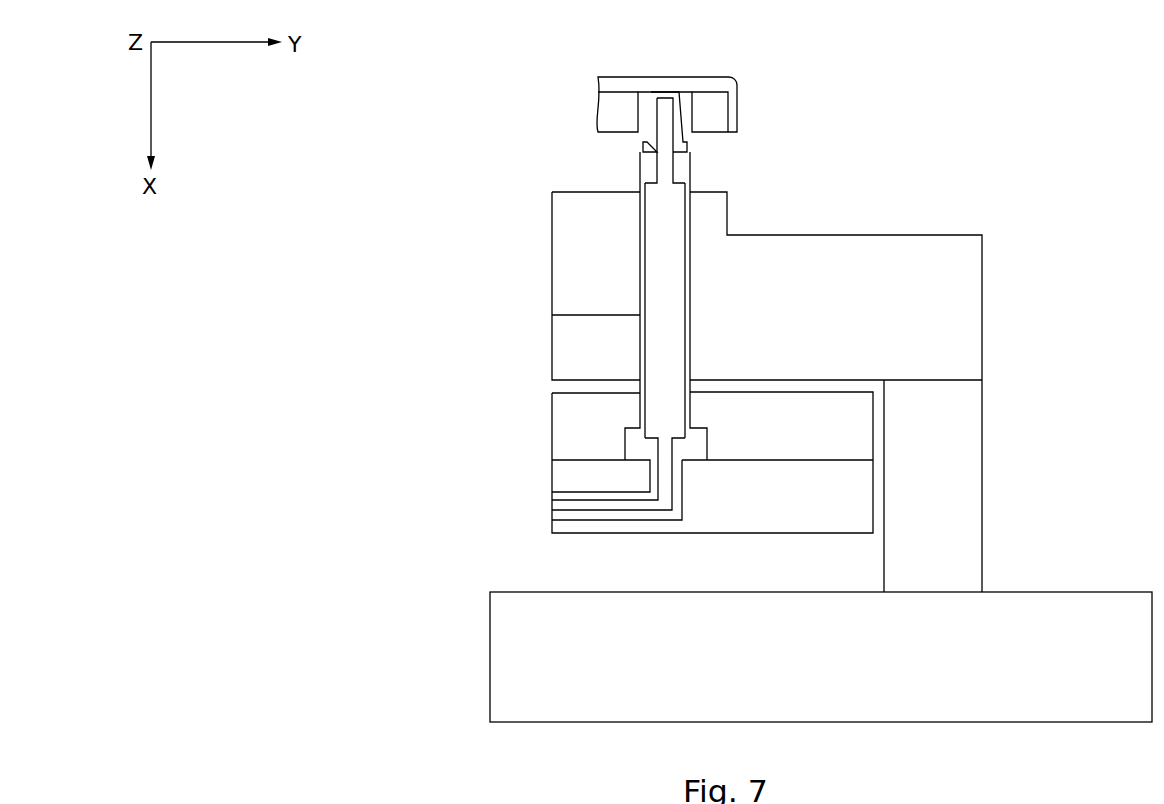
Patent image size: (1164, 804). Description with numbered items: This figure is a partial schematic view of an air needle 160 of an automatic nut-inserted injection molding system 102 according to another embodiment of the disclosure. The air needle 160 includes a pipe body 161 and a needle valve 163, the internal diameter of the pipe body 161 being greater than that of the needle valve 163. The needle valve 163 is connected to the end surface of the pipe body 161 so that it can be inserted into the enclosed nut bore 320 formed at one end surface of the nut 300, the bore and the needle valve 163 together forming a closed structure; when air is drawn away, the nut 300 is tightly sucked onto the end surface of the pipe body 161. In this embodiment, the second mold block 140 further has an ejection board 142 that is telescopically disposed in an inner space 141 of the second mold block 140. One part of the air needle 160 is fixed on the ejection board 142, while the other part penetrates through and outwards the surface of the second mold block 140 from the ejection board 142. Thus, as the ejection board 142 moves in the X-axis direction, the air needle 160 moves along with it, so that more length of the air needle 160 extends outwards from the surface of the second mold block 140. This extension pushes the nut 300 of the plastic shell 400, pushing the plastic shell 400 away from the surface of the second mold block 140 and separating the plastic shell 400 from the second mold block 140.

The automatic nut-inserted injection molding system 102 is at (1117, 51).
The second mold block 140 is at (950, 308).
The inner space 141 is at (866, 556).
The ejection board 142 is at (577, 428).
The air needle 160 is at (452, 142).
The pipe body 161 is at (660, 163).
The needle valve 163 is at (672, 215).
The nut 300 is at (663, 92).
The enclosed nut bore 320 is at (684, 125).
The plastic shell 400 is at (723, 87).